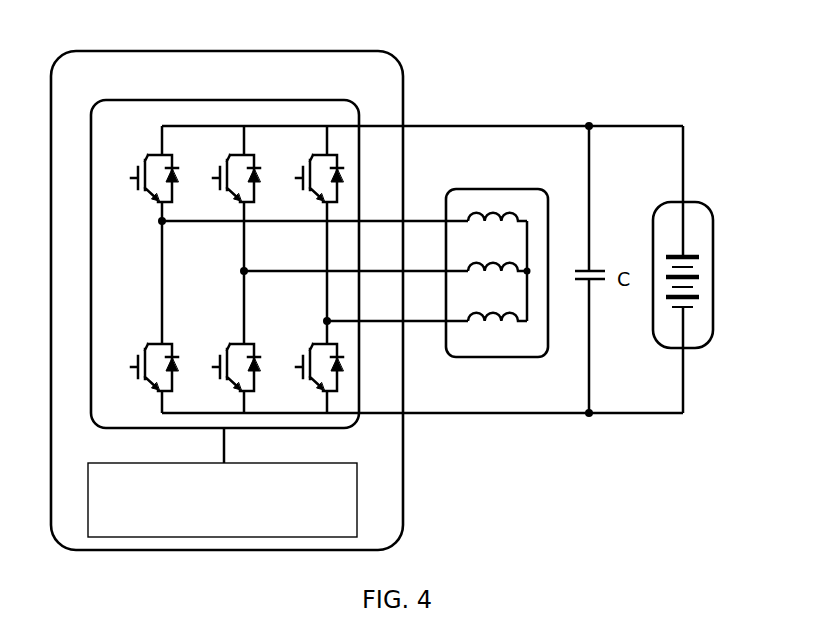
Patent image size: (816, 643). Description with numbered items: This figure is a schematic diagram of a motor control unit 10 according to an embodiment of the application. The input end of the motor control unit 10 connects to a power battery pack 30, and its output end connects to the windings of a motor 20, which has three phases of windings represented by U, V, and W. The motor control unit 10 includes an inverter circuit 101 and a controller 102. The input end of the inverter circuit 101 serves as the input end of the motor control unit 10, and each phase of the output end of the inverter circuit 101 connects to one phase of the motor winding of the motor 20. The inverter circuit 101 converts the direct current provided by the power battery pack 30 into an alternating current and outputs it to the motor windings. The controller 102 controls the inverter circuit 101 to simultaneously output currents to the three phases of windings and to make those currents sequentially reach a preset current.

The motor control unit 10 is at (248, 51).
The inverter circuit 101 is at (222, 99).
The controller 102 is at (332, 462).
The motor 20 is at (493, 189).
The power battery pack 30 is at (702, 201).